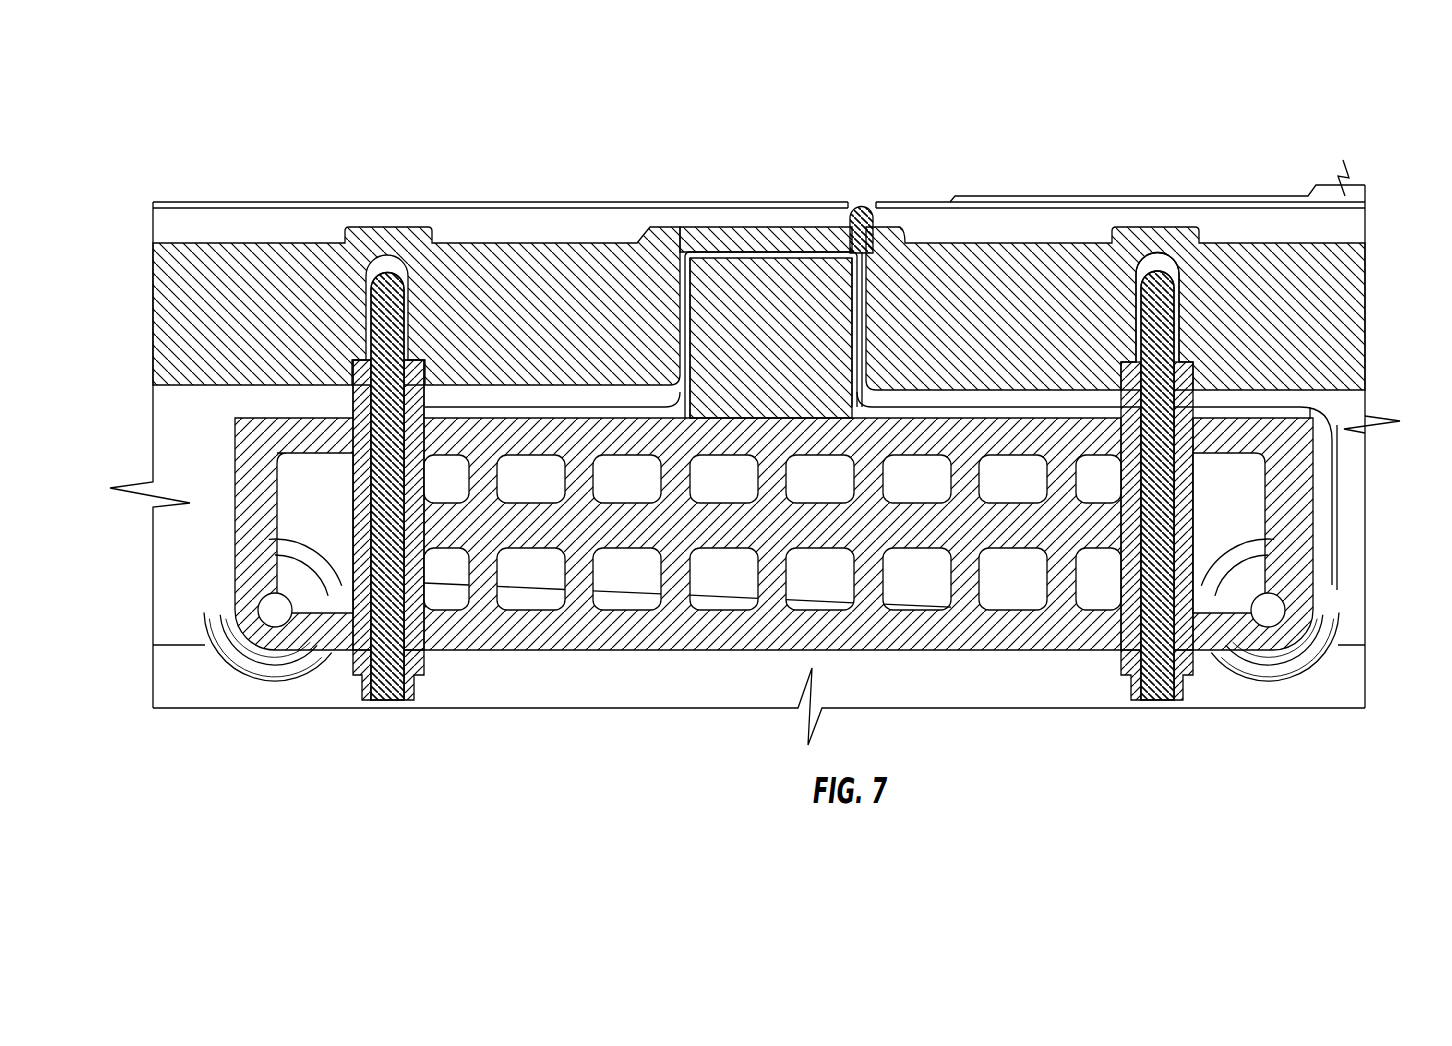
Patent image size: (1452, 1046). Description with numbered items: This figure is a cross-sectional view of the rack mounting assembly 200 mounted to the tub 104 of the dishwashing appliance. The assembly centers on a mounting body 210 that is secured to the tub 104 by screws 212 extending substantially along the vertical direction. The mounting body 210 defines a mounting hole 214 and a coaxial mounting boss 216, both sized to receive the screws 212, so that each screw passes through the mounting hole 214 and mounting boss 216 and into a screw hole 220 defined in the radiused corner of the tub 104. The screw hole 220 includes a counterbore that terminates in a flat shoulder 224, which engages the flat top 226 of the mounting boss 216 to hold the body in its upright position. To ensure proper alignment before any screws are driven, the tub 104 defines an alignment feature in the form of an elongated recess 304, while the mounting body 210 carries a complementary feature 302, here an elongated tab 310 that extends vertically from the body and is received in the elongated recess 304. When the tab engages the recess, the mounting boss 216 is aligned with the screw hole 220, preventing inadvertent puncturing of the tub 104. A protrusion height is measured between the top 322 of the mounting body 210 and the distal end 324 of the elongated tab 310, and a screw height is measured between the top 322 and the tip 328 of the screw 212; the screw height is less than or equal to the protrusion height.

The tub 104 is at (1030, 282).
The rack mounting assembly 200 is at (1017, 660).
The mounting body 210 is at (705, 640).
The screws 212 is at (1160, 540).
The mounting hole 214 is at (1305, 410).
The mounting boss 216 is at (221, 524).
The screw hole 220 is at (1151, 265).
The flat shoulder 224 is at (357, 462).
The flat top 226 is at (413, 358).
The complementary feature 302 is at (718, 278).
The elongated recess 304 is at (858, 250).
The elongated tab 310 is at (795, 300).
The top 322 is at (560, 408).
The distal end 324 is at (738, 258).
The tip 328 is at (1167, 270).